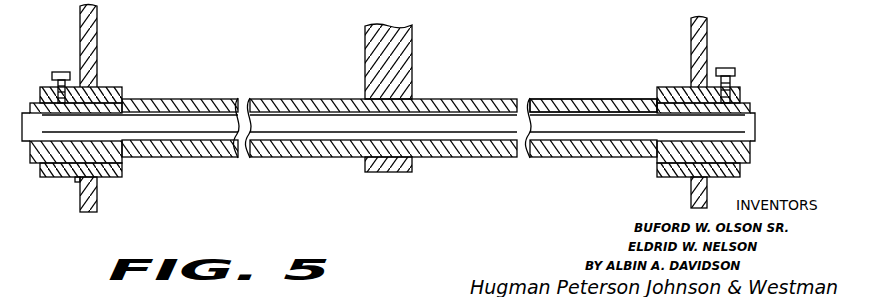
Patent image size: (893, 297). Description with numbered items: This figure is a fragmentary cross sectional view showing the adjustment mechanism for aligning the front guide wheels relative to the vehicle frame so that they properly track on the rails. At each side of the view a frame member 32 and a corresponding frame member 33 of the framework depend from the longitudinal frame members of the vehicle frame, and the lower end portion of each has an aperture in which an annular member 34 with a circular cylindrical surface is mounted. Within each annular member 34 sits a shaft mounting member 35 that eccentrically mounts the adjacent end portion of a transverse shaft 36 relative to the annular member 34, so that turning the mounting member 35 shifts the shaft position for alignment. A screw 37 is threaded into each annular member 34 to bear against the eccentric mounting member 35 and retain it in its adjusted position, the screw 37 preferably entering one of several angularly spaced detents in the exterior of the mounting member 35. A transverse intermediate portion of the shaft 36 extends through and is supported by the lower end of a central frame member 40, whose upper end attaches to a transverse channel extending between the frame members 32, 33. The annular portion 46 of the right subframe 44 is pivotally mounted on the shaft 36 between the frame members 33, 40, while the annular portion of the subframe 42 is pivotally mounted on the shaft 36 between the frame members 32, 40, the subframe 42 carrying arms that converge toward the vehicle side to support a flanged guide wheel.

The frame member 32 is at (88, 43).
The frame member 33 is at (703, 43).
The annular member 34 is at (122, 87).
The shaft mounting member 35 is at (30, 163).
The shaft 36 is at (196, 134).
The screw 37 is at (61, 72).
The frame member 40 is at (401, 83).
The subframe 42 is at (597, 160).
The right subframe 44 is at (302, 161).
The annular portion 46 is at (578, 100).